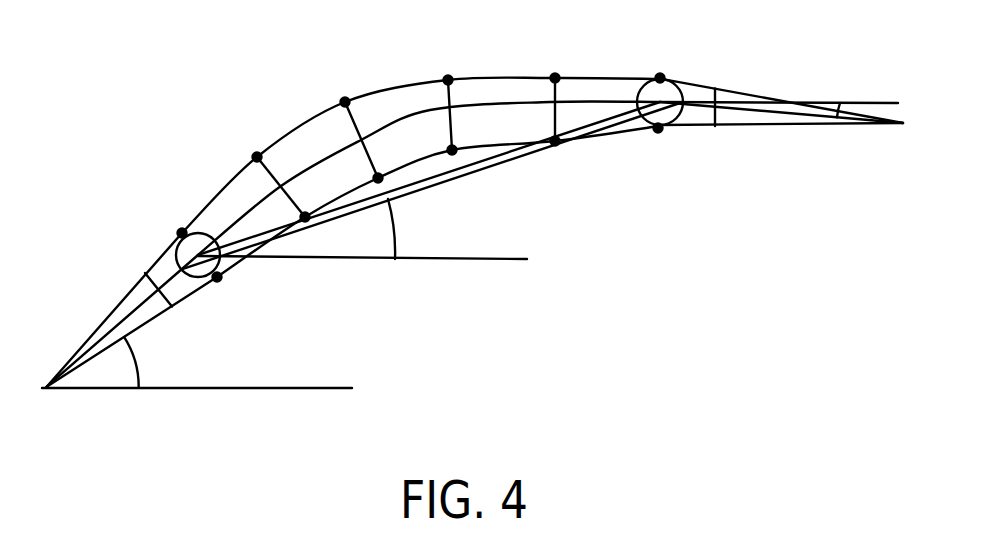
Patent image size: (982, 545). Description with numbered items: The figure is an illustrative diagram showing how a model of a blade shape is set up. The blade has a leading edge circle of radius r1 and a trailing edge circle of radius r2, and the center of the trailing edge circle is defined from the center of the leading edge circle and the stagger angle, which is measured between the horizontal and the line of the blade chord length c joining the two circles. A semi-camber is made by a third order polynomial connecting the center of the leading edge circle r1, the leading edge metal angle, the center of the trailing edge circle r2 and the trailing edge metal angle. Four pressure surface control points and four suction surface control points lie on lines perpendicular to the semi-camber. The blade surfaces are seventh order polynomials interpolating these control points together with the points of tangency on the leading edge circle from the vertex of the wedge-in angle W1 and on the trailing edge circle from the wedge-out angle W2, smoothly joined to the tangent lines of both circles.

The radius of leading edge circle r1 is at (181, 255).
The radius of trailing edge circle r2 is at (660, 83).
The wedge-in angle W1 is at (179, 304).
The wedge-out angle W2 is at (718, 128).
The blade chord length c is at (432, 185).